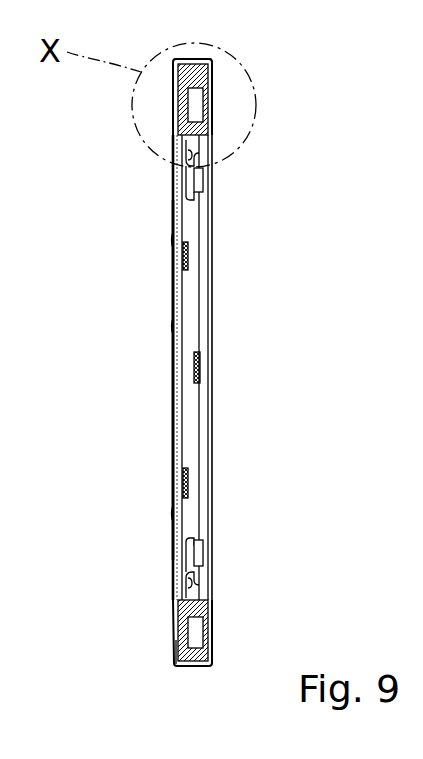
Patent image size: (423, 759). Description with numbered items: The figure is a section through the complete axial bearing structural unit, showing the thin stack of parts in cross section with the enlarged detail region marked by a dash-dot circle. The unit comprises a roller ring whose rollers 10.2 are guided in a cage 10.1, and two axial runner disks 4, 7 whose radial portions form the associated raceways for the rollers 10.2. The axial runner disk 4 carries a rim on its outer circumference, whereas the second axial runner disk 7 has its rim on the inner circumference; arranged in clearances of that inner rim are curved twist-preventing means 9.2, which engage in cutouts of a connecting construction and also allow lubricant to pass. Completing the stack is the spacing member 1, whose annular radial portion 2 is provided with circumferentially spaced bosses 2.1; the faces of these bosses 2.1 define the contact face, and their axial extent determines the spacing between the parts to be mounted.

The spacing member 1 is at (209, 60).
The annular radial portion 2 is at (174, 330).
The bosses 2.1 is at (174, 235).
The axial runner disk 4 is at (177, 640).
The second axial runner disk 7 is at (212, 105).
The twist-preventing means 9.2 is at (212, 183).
The cage 10.1 is at (212, 77).
The rollers 10.2 is at (212, 632).